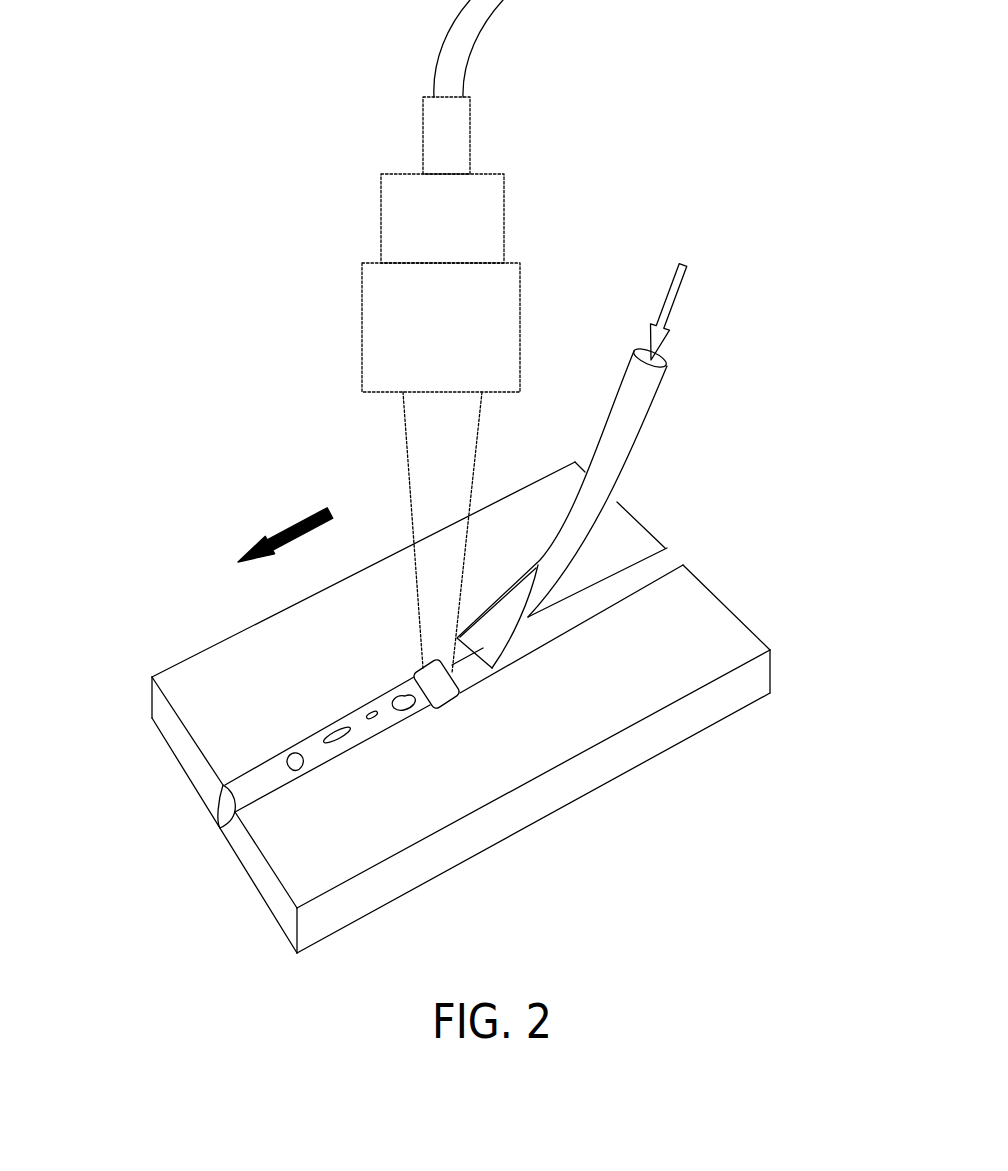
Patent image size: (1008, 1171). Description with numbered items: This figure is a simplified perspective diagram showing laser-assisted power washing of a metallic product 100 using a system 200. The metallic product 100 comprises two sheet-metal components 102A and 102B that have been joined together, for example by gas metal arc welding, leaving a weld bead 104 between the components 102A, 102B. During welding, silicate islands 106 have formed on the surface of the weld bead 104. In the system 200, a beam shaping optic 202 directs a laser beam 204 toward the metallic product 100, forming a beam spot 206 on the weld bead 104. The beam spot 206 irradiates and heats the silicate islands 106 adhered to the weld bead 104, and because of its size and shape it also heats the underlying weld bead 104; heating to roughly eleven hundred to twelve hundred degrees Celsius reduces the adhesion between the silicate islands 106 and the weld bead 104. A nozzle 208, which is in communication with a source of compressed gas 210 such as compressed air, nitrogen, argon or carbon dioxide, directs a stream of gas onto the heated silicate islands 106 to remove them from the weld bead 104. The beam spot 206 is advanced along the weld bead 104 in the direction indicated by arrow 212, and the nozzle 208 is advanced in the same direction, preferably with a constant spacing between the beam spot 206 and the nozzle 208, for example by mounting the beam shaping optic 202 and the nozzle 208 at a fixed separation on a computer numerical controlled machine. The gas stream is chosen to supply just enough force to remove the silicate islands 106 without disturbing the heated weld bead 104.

The metallic product 100 is at (700, 765).
The sheet-metal component 102A is at (200, 682).
The sheet-metal component 102B is at (717, 660).
The weld bead 104 is at (660, 567).
The silicate islands 106 is at (340, 730).
The system 200 is at (643, 242).
The beam shaping optic 202 is at (405, 347).
The laser beam 204 is at (430, 447).
The beam spot 206 is at (462, 692).
The nozzle 208 is at (605, 475).
The source of compressed gas 210 is at (670, 303).
The arrow 212 is at (278, 525).